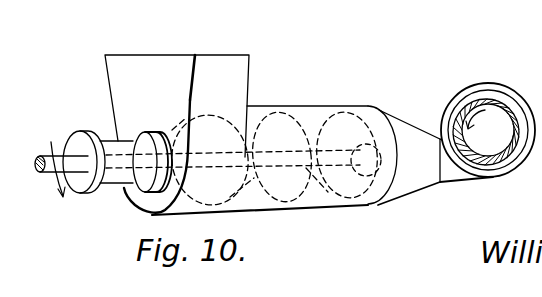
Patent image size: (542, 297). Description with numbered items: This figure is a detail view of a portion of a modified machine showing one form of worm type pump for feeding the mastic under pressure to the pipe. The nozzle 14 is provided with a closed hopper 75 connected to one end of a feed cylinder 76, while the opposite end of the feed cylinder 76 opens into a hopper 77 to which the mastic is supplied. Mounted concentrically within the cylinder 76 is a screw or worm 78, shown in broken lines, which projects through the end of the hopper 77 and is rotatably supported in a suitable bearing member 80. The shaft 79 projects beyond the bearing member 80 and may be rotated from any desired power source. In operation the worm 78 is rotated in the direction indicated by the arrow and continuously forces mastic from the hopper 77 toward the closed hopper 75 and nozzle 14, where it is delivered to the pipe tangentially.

The nozzle 14 is at (512, 99).
The closed hopper 75 is at (460, 177).
The feed cylinder 76 is at (313, 208).
The hopper 77 is at (244, 73).
The screw or worm 78 is at (291, 120).
The shaft 79 is at (353, 107).
The bearing member 80 is at (80, 137).